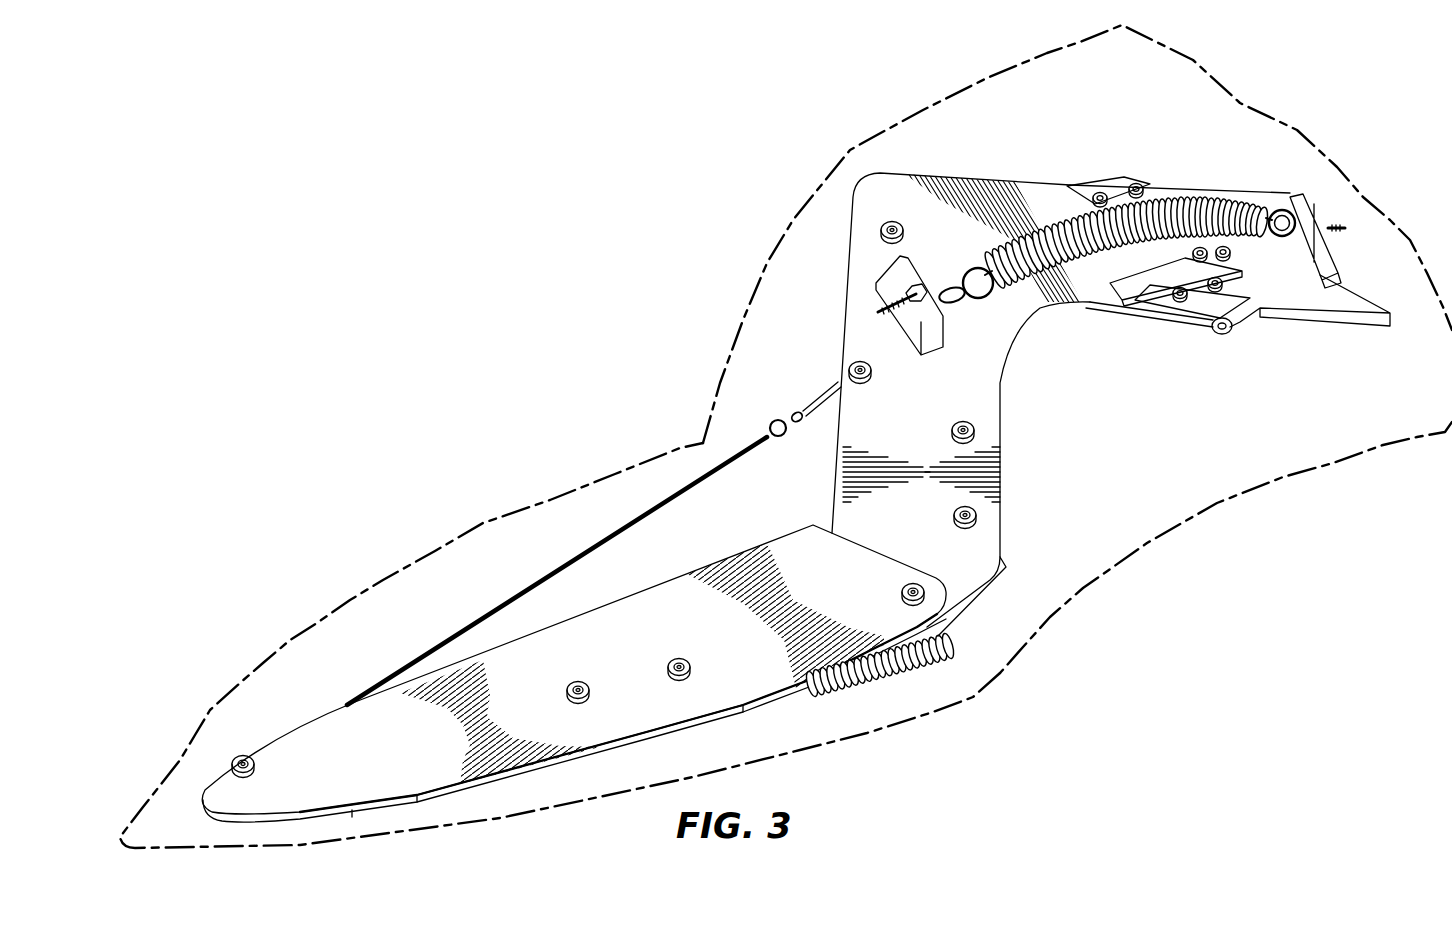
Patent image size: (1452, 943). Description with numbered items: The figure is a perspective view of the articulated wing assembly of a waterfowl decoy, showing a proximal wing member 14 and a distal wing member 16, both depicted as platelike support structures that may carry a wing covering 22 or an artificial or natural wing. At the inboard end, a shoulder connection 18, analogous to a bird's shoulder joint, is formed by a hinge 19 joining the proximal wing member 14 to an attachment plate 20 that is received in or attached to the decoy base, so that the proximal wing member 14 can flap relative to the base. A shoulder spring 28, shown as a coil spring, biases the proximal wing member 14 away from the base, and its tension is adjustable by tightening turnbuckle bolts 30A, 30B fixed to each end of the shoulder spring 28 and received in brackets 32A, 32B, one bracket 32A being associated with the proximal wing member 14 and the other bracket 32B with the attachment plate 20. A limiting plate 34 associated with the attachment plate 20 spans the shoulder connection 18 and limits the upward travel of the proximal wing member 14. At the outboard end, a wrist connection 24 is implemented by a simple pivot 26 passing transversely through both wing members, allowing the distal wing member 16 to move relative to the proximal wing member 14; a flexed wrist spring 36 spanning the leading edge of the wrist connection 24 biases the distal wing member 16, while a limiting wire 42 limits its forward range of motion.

The proximal wing member 14 is at (982, 397).
The distal wing member 16 is at (655, 608).
The shoulder connection 18 is at (1225, 350).
The hinge 19 is at (1198, 320).
The attachment plate 20 is at (1352, 290).
The wing covering 22 is at (1097, 560).
The wrist connection 24 is at (948, 692).
The pivot 26 is at (905, 582).
The shoulder spring 28 is at (1196, 196).
The turnbuckle bolt 30A is at (958, 278).
The turnbuckle bolt 30B is at (1283, 237).
The bracket 32A is at (898, 270).
The bracket 32B is at (1298, 196).
The limiting plate 34 is at (1158, 300).
The wrist spring 36 is at (878, 690).
The limiting wire 42 is at (480, 617).